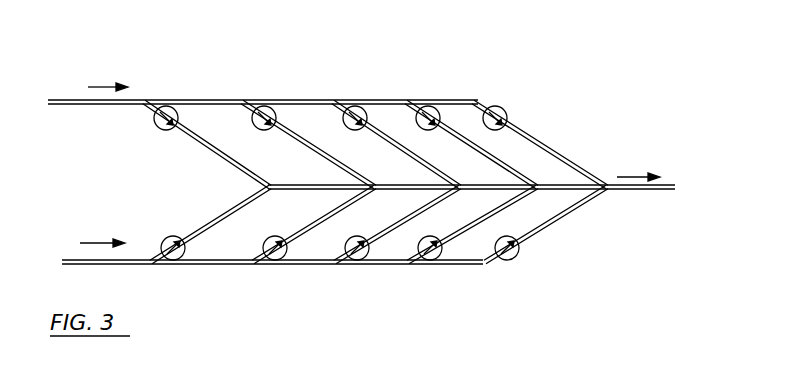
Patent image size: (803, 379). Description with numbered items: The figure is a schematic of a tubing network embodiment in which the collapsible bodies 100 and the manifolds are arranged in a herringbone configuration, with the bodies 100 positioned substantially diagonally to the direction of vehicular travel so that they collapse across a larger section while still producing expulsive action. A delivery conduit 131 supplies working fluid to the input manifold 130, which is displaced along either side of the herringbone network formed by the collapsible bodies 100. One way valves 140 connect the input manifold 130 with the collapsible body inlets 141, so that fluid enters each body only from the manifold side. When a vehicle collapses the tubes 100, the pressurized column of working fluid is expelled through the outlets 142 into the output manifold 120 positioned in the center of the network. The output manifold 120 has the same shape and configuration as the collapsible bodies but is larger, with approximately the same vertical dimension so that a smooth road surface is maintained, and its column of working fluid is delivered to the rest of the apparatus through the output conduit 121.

The collapsible body 100 is at (515, 118).
The output manifold 120 is at (547, 185).
The output conduit 121 is at (675, 185).
The input manifold 130 is at (312, 100).
The delivery conduit 131 is at (80, 104).
The one way valve 140 is at (175, 103).
The collapsible body inlet 141 is at (190, 132).
The outlet 142 is at (268, 185).